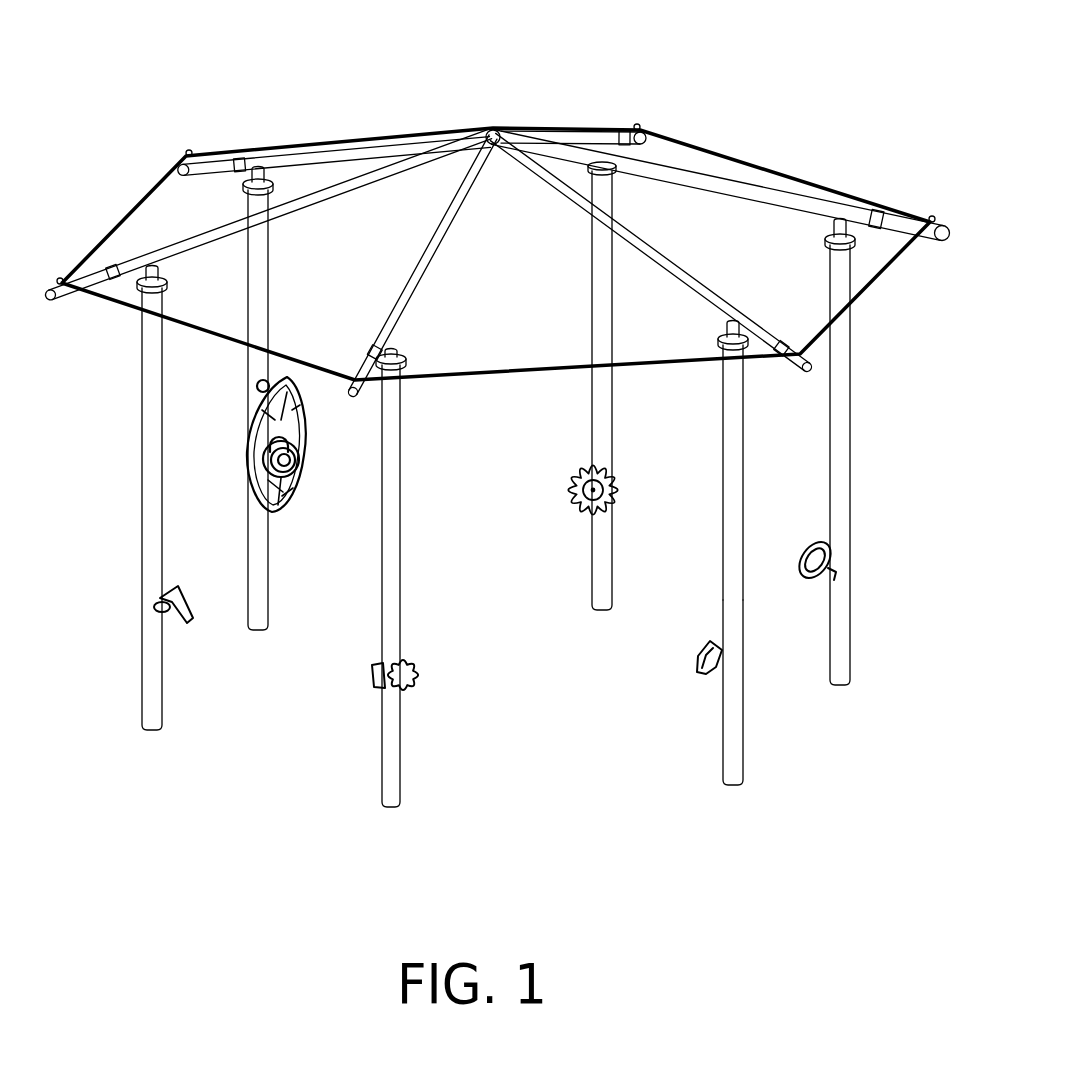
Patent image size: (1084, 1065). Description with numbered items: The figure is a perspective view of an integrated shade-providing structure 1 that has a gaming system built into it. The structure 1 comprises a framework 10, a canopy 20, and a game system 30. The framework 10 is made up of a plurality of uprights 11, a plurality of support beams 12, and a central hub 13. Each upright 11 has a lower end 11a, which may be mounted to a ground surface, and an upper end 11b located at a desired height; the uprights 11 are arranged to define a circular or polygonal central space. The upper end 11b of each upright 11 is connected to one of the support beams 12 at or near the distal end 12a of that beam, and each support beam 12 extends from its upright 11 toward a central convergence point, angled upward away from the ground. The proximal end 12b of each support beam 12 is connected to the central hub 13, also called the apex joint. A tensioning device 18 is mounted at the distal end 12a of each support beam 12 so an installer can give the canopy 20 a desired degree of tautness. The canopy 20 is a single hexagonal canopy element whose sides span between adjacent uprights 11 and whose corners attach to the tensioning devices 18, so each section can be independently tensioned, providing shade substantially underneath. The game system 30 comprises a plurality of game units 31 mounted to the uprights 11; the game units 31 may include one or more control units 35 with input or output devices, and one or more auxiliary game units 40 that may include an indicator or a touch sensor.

The shade-providing structure 1 is at (713, 88).
The framework 10 is at (838, 428).
The upright 11 is at (735, 440).
The lower end 11a is at (735, 758).
The upper end 11b is at (722, 349).
The support beam 12 is at (665, 172).
The distal end 12a is at (945, 231).
The proximal end 12b is at (551, 148).
The central hub 13 is at (492, 130).
The tensioning device 18 is at (54, 303).
The canopy 20 is at (172, 212).
The game system 30 is at (562, 783).
The game unit 31 is at (569, 487).
The control unit 35 is at (308, 450).
The auxiliary game unit 40 is at (696, 660).